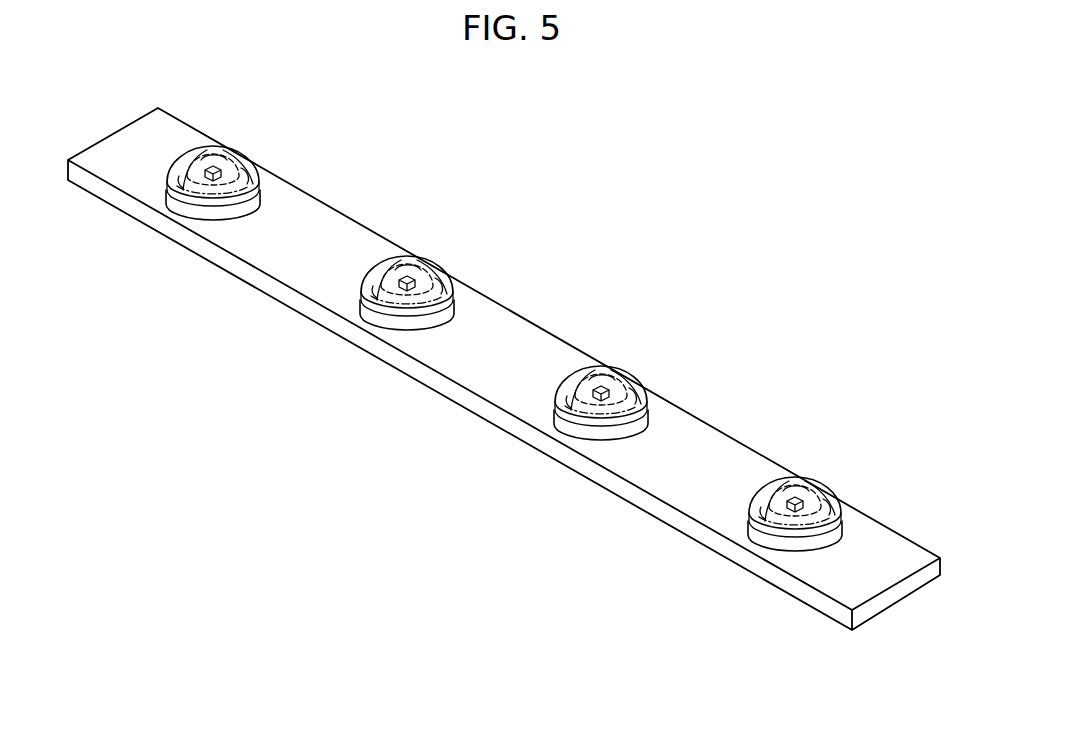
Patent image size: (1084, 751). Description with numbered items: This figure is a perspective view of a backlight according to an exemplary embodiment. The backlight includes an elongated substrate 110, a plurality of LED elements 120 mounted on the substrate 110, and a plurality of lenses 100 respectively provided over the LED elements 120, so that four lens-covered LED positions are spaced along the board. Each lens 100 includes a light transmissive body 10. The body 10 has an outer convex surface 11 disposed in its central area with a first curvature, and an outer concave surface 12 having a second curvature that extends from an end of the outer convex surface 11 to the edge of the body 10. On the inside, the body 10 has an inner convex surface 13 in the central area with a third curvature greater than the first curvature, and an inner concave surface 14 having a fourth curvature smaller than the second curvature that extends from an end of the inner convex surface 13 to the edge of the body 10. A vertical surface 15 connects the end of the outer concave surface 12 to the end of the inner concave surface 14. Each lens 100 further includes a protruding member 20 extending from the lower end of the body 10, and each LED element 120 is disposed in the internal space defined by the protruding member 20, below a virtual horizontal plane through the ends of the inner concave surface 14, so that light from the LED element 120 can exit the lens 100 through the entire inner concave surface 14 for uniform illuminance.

The lens 100 is at (693, 362).
The light transmissive body 10 is at (663, 354).
The outer convex surface 11 is at (592, 366).
The outer concave surface 12 is at (563, 392).
The inner convex surface 13 is at (610, 378).
The inner concave surface 14 is at (630, 386).
The vertical surface 15 is at (643, 405).
The protruding member 20 is at (628, 442).
The substrate 110 is at (693, 503).
The LED element 120 is at (800, 495).